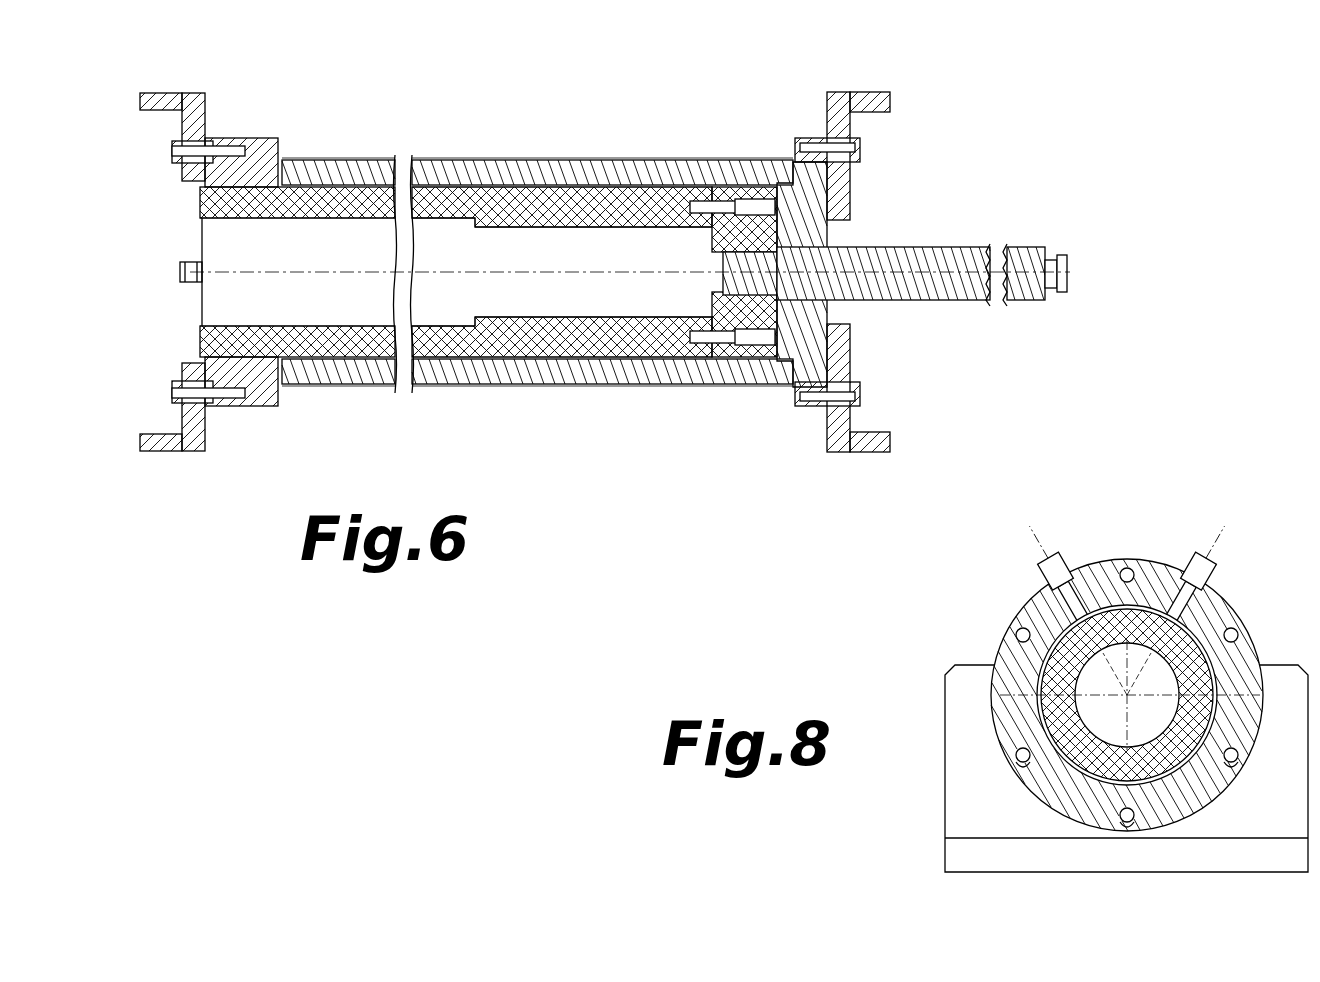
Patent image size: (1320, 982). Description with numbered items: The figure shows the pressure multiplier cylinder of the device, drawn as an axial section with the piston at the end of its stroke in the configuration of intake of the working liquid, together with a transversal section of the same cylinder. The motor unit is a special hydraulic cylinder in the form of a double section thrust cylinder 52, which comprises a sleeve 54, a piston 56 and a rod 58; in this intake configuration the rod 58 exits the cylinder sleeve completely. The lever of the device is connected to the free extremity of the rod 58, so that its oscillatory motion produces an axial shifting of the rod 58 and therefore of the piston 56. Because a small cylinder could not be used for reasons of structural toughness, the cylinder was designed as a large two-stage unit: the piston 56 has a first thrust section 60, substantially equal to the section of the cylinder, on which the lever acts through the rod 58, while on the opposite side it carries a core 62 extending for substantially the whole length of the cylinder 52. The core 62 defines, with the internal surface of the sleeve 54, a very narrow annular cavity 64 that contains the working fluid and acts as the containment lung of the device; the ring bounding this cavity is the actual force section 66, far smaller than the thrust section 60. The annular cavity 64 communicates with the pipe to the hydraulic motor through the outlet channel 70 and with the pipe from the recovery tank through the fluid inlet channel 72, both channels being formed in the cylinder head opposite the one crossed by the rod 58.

In FIG. 6, the double section thrust cylinder 52 is at (533, 148).
In FIG. 6, the sleeve 54 is at (313, 177).
In FIG. 6, the piston 56 is at (753, 313).
In FIG. 6, the rod 58 is at (935, 301).
In FIG. 6, the first thrust section 60 is at (777, 225).
In FIG. 6, the core 62 is at (547, 343).
In FIG. 8, the core 62 is at (1055, 680).
In FIG. 6, the annular cavity 64 is at (440, 190).
In FIG. 8, the annular cavity 64 is at (1048, 722).
In FIG. 6, the force section 66 is at (697, 180).
In FIG. 8, the outlet channel 70 is at (1182, 608).
In FIG. 8, the fluid inlet channel 72 is at (1083, 602).